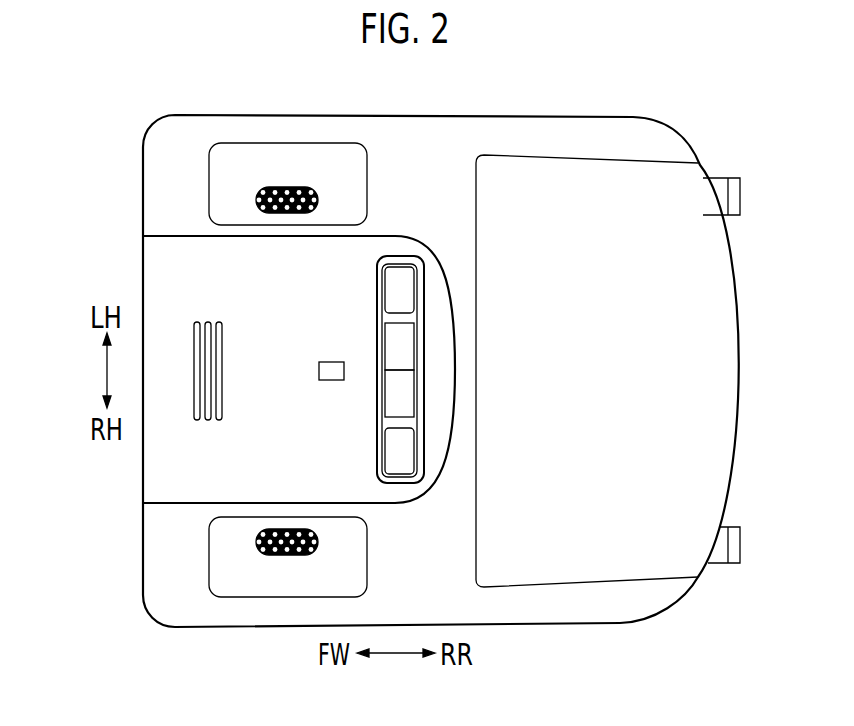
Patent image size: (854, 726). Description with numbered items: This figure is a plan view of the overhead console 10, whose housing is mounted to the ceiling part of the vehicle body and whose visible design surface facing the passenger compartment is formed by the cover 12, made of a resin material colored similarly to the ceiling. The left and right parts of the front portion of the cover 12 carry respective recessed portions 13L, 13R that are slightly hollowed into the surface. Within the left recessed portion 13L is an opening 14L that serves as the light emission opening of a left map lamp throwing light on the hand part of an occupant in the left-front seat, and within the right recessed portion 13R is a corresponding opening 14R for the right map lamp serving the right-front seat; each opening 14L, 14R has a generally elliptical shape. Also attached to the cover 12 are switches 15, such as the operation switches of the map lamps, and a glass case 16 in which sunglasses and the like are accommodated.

The overhead console 10 is at (397, 346).
The cover 12 is at (420, 143).
The left recessed portion 13L is at (336, 180).
The right recessed portion 13R is at (336, 568).
The opening 14L is at (285, 213).
The opening 14R is at (285, 528).
The switches 15 is at (392, 345).
The glass case 16 is at (698, 342).